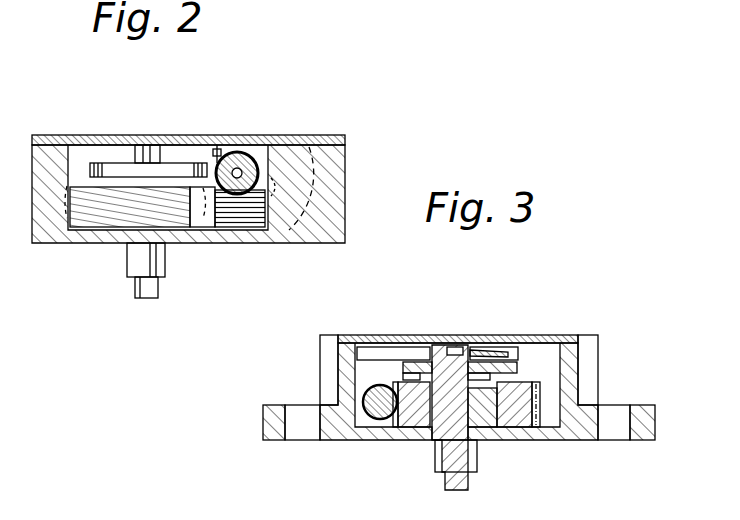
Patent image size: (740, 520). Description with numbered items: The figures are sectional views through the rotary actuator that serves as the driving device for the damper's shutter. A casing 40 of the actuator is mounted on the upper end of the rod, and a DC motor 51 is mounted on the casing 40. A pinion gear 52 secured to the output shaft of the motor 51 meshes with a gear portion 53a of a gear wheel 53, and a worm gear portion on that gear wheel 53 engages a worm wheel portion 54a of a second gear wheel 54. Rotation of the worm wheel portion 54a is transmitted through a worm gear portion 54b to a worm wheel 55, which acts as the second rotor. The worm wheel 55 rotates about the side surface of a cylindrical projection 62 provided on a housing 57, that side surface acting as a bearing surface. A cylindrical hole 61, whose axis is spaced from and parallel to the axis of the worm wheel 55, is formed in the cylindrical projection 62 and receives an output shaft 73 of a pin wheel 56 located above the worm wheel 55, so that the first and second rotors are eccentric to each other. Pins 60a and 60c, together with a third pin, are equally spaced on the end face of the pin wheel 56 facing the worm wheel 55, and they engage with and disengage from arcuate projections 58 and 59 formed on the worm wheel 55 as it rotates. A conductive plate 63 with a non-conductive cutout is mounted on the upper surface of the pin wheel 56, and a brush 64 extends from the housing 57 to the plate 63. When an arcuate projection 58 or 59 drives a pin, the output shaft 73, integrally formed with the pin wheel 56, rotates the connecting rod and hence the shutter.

In FIG. 3, the casing 40 is at (562, 336).
In FIG. 2, the DC motor 51 is at (216, 151).
In FIG. 2, the pinion gear 52 is at (268, 141).
In FIG. 2, the gear wheel 53 is at (250, 153).
In FIG. 2, the gear portion 53a is at (236, 168).
In FIG. 2, the gear wheel 54 is at (214, 218).
In FIG. 3, the gear wheel 54 is at (372, 398).
In FIG. 2, the worm wheel portion 54a is at (247, 229).
In FIG. 2, the worm gear portion 54b is at (92, 215).
In FIG. 3, the worm wheel 55 is at (405, 412).
In FIG. 2, the pin wheel 56 is at (106, 178).
In FIG. 3, the pin wheel 56 is at (405, 362).
In FIG. 2, the housing 57 is at (302, 243).
In FIG. 3, the housing 57 is at (572, 440).
In FIG. 2, the arcuate projection 58 is at (132, 175).
In FIG. 3, the arcuate projection 58 is at (520, 379).
In FIG. 3, the arcuate projection 59 is at (425, 384).
In FIG. 2, the pin 60a is at (190, 178).
In FIG. 2, the pin 60c is at (103, 180).
In FIG. 3, the pin 60c is at (400, 376).
In FIG. 3, the cylindrical hole 61 is at (448, 471).
In FIG. 3, the cylindrical projection 62 is at (493, 426).
In FIG. 3, the plate 63 is at (511, 368).
In FIG. 3, the brush 64 is at (488, 351).
In FIG. 2, the output shaft 73 is at (134, 285).
In FIG. 3, the output shaft 73 is at (470, 481).